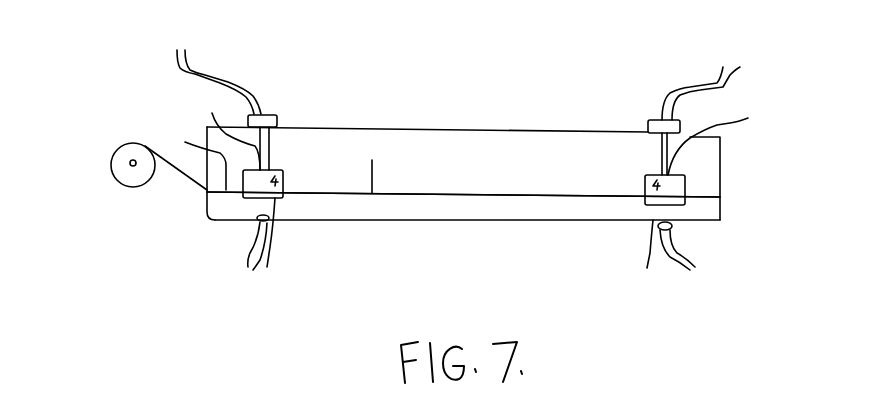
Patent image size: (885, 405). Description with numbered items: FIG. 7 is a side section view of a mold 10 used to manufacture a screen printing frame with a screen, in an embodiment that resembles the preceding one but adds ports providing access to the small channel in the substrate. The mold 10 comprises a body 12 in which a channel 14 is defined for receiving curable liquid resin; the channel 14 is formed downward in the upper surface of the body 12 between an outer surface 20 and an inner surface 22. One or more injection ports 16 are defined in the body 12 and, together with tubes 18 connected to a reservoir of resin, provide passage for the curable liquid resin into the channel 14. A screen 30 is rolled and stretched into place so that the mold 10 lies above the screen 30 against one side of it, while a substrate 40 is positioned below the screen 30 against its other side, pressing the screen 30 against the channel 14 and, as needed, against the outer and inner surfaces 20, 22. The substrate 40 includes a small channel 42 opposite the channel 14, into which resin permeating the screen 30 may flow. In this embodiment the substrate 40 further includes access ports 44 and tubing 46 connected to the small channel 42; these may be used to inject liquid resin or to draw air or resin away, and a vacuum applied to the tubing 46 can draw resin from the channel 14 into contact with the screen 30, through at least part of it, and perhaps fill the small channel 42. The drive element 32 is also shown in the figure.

The mold 10 is at (837, 103).
The body 12 is at (480, 153).
The channel 14 is at (275, 170).
The injection ports 16 is at (488, 133).
The tubes 18 is at (142, 37).
The outer surface 20 is at (703, 193).
The inner surface 22 is at (372, 192).
The screen 30 is at (560, 200).
The pulley 32 is at (104, 215).
The substrate 40 is at (463, 265).
The small channel 42 is at (648, 205).
The access ports 44 is at (647, 268).
The tubing 46 is at (720, 280).